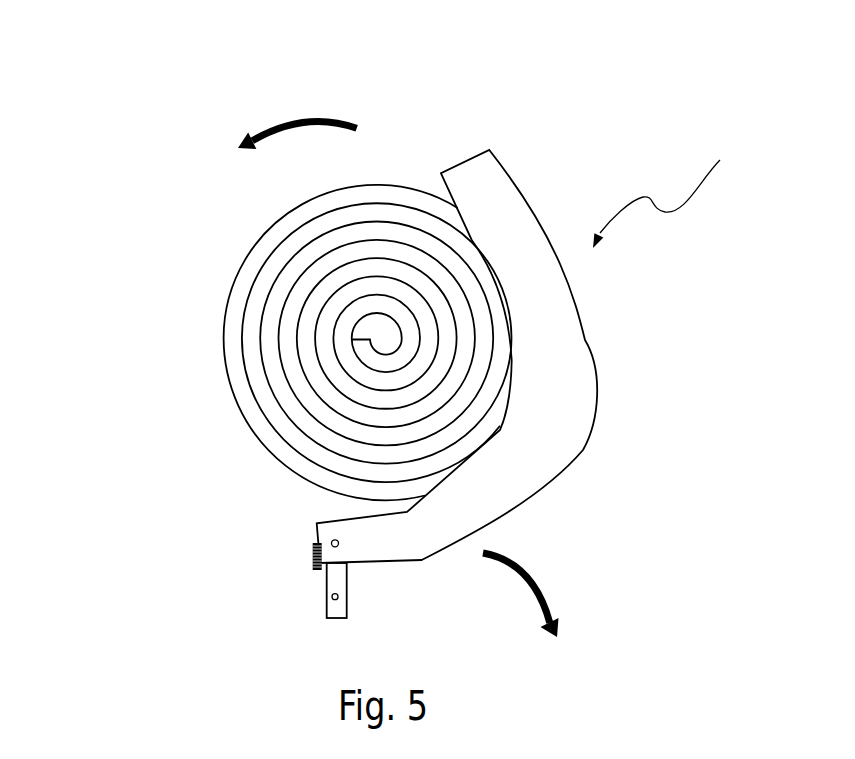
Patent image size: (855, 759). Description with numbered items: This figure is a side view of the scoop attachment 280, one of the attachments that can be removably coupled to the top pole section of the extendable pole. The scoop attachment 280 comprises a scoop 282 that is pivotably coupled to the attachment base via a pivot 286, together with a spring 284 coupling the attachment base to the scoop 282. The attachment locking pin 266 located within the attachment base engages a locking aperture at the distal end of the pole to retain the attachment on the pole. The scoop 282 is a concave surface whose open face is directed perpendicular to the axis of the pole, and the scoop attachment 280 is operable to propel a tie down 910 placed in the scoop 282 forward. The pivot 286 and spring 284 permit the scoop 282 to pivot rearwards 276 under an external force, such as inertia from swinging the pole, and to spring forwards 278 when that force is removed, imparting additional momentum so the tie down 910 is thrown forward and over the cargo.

The tie down 910 is at (233, 335).
The scoop 282 is at (510, 223).
The pivot 286 is at (332, 542).
The spring 284 is at (313, 560).
The attachment locking pin 266 is at (332, 599).
The spring forwards 278 is at (273, 127).
The pivot rearwards 276 is at (530, 590).
The scoop attachment 280 is at (675, 194).